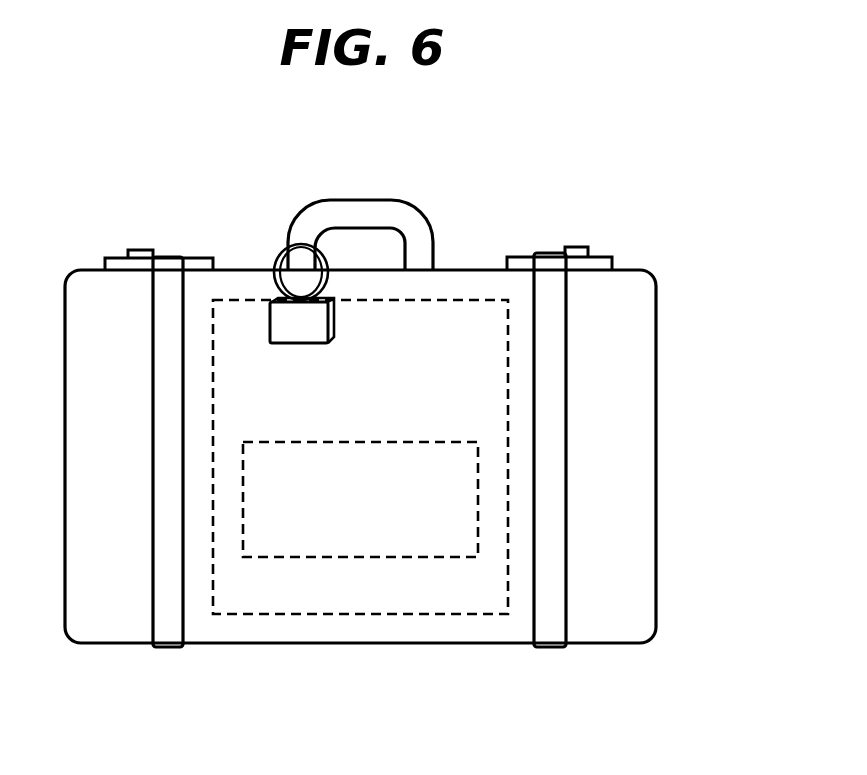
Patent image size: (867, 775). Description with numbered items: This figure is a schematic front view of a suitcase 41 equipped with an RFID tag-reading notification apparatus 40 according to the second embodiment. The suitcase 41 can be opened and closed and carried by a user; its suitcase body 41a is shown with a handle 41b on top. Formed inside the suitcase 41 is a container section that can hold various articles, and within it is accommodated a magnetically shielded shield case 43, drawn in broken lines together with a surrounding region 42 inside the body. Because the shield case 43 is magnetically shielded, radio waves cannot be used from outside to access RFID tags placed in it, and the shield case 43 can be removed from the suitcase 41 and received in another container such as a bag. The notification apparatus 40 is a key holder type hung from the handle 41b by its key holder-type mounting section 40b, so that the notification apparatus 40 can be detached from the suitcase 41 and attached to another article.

The notification apparatus 40 is at (330, 320).
The key holder-type mounting section 40b is at (277, 290).
The suitcase 41 is at (401, 387).
The suitcase body 41a is at (656, 452).
The handle 41b is at (370, 208).
The first region 42 is at (452, 307).
The shield case 43 is at (377, 438).